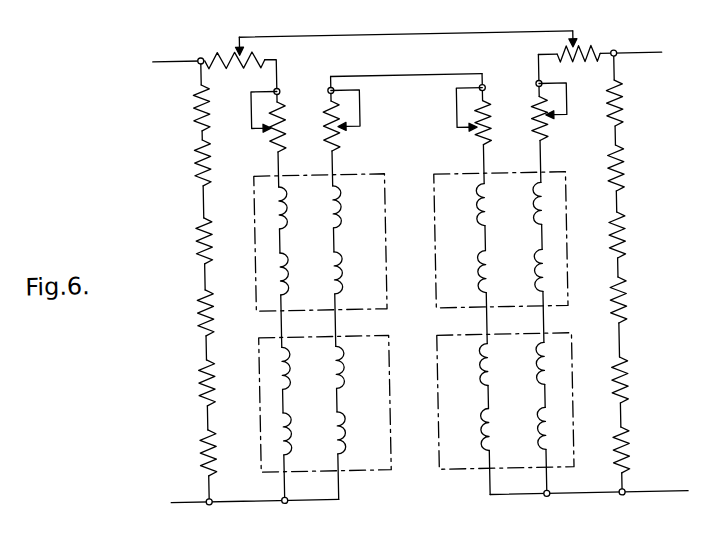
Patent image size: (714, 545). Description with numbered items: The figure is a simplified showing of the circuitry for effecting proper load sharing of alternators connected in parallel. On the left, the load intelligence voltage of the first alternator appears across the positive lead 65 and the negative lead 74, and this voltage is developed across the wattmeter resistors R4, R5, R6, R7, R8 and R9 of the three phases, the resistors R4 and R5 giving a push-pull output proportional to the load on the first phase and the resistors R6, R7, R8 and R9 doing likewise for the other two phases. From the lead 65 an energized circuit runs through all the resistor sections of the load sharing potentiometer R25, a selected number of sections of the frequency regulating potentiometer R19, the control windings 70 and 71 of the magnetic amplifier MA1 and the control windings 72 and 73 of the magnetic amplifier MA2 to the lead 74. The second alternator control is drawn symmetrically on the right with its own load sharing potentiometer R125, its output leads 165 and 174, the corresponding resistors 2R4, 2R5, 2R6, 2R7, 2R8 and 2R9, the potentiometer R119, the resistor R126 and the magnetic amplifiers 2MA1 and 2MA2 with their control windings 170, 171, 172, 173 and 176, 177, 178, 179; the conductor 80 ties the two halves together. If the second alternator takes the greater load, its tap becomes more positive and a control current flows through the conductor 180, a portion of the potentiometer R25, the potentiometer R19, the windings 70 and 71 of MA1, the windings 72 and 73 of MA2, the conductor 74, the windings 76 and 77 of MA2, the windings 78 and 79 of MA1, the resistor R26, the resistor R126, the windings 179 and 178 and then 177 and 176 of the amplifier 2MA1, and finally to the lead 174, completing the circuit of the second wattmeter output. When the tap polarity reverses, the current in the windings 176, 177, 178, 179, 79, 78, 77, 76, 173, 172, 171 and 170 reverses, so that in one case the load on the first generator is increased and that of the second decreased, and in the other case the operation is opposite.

The lead 65 is at (217, 52).
The load sharing potentiometer R25 is at (256, 55).
The conductor 180 is at (435, 35).
The common conductor 80 is at (435, 75).
The load sharing potentiometer R125 is at (564, 52).
The lead 165 is at (612, 56).
The resistor R4 is at (197, 106).
The resistor R5 is at (197, 168).
The resistor R6 is at (197, 238).
The resistor R7 is at (197, 308).
The resistor R8 is at (197, 377).
The resistor R9 is at (197, 449).
The resistor 2R4 is at (626, 104).
The resistor 2R5 is at (626, 166).
The resistor 2R6 is at (626, 234).
The resistor 2R7 is at (626, 306).
The resistor 2R8 is at (626, 376).
The resistor 2R9 is at (626, 447).
The frequency regulating potentiometer R19 is at (271, 145).
The resistor R26 is at (342, 144).
The resistor R126 is at (477, 137).
The potentiometer R119 is at (535, 123).
The magnetic amplifier MA1 is at (342, 173).
The magnetic amplifier MA2 is at (347, 335).
The magnetic amplifier 2MA1 is at (545, 172).
The magnetic amplifier 2MA2 is at (544, 335).
The control winding 70 is at (289, 204).
The control winding 71 is at (289, 270).
The control winding 72 is at (289, 370).
The control winding 73 is at (289, 430).
The control winding 76 is at (343, 430).
The control winding 77 is at (343, 371).
The control winding 78 is at (343, 270).
The control winding 79 is at (343, 204).
The control winding 170 is at (535, 204).
The control winding 171 is at (535, 270).
The control winding 172 is at (535, 371).
The control winding 173 is at (535, 431).
The control winding 176 is at (479, 429).
The control winding 177 is at (479, 369).
The control winding 178 is at (479, 269).
The control winding 179 is at (479, 203).
The lead 74 is at (244, 500).
The lead 174 is at (579, 498).